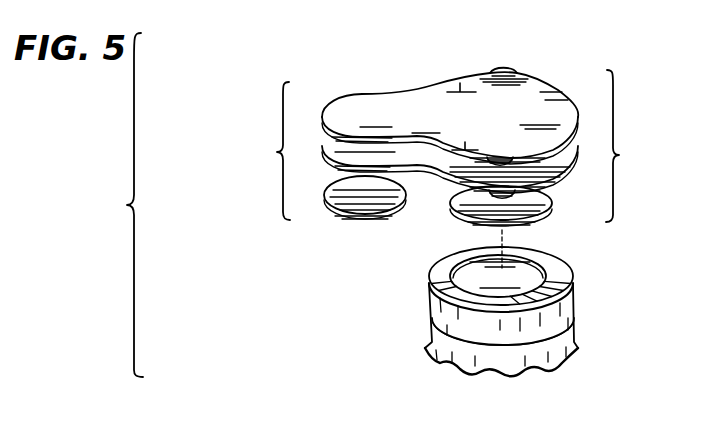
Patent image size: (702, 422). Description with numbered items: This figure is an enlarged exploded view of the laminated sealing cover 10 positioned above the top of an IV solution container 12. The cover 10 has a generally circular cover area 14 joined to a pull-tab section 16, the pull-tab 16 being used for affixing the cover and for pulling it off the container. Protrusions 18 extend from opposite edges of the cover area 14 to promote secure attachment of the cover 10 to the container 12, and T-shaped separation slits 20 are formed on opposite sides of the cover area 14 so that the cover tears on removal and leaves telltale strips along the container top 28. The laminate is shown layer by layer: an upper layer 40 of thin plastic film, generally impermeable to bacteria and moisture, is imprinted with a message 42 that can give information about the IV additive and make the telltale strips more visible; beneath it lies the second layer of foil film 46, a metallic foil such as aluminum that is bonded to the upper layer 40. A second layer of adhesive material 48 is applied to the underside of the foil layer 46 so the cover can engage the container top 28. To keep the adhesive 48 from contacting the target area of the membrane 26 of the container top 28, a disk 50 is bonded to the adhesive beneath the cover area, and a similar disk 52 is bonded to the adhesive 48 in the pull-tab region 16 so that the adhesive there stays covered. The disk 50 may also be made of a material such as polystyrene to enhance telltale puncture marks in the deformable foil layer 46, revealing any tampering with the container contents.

The sealing cover 10 is at (250, 206).
The IV solution container 12 is at (463, 358).
The cover area 14 is at (647, 165).
The pull-tab section 16 is at (276, 159).
The protrusions 18 is at (503, 70).
The separation slits 20 is at (457, 88).
The membrane 26 is at (532, 273).
The container top 28 is at (543, 332).
The upper layer 40 is at (333, 102).
The message 42 is at (500, 157).
The foil film layer 46 is at (357, 155).
The second layer of adhesive material 48 is at (355, 178).
The disk 50 is at (477, 202).
The disk 52 is at (378, 205).